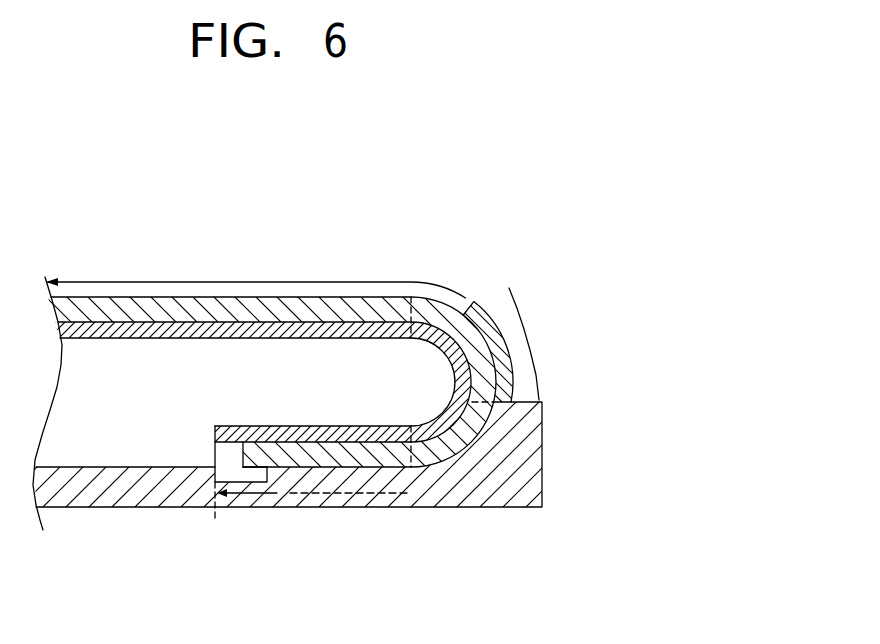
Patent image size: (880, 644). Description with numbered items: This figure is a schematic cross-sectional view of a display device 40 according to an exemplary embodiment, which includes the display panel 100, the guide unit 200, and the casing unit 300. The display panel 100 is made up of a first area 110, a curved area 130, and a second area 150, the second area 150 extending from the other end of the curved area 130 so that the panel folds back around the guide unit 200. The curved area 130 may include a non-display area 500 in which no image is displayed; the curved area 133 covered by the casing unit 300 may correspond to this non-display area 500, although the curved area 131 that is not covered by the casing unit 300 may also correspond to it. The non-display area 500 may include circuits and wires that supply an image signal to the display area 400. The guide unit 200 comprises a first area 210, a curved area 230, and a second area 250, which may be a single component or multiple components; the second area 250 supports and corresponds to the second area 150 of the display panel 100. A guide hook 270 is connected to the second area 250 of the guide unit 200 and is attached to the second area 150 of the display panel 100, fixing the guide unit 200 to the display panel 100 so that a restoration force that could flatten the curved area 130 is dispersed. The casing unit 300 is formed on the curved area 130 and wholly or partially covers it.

The display device 40 is at (328, 359).
The display panel 100 is at (328, 348).
The first area 110 is at (328, 367).
The second area 150 is at (292, 324).
The curved area 130 is at (483, 315).
The curved area 131 is at (432, 438).
The curved area 133 is at (514, 315).
The guide unit 200 is at (332, 490).
The first area 210 is at (296, 518).
The curved area 230 is at (410, 470).
The second area 250 is at (313, 498).
The guide hook 270 is at (212, 455).
The casing unit 300 is at (315, 486).
The display area 400 is at (256, 277).
The non-display area 500 is at (476, 486).